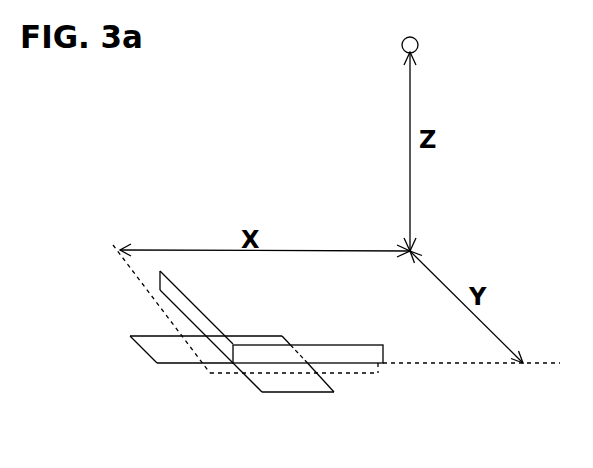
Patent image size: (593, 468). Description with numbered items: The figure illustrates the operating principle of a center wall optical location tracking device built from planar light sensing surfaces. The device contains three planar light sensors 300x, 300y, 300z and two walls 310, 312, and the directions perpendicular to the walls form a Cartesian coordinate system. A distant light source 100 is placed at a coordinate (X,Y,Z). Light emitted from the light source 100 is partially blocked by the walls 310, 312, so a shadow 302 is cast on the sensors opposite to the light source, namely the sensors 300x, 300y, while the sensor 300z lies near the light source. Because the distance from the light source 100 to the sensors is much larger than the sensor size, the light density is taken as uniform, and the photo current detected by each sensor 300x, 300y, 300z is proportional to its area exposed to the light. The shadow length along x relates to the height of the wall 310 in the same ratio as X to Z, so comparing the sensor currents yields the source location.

The distance light source 100 is at (418, 47).
The wall 312 is at (170, 292).
The planar light sensor 300y is at (150, 345).
The planar light sensor 300z is at (259, 336).
The wall 310 is at (347, 353).
The planar light sensor 300x is at (288, 380).
The shadow 302 is at (255, 382).